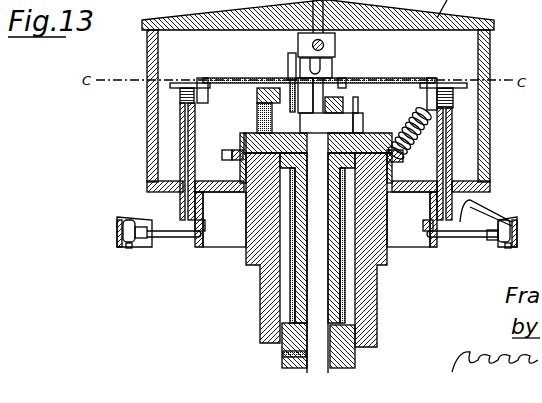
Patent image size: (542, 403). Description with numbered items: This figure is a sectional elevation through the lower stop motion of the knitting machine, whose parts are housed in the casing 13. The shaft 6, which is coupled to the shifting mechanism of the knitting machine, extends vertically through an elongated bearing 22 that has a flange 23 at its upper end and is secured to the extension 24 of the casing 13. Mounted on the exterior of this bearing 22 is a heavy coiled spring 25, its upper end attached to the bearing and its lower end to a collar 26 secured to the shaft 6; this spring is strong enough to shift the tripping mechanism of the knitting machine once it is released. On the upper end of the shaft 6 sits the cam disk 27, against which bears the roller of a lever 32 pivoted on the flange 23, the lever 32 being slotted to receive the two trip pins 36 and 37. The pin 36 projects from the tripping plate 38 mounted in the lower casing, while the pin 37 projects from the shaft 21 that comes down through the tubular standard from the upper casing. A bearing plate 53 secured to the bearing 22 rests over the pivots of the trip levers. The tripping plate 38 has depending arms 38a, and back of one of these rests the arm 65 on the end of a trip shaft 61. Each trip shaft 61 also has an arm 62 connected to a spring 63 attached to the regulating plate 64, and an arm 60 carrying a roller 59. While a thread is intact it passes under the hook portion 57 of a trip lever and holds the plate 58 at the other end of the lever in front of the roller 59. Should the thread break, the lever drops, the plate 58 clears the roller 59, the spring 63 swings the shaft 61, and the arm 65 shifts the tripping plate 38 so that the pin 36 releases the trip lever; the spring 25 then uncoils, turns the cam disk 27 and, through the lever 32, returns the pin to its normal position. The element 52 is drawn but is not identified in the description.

The casing of the lower stop motion 13 is at (147, 115).
The shaft 21 is at (299, 36).
The trip pin 37 is at (288, 65).
The trip pin 36 is at (296, 113).
The tripping plate 38 is at (377, 78).
The depending arms 38a is at (208, 91).
The arm 65 is at (199, 83).
The arm 62 is at (198, 103).
The trip shaft 61 is at (185, 147).
The bearing plate 53 is at (257, 97).
The threaded stud 52 is at (257, 120).
The cam disk 27 is at (330, 105).
The lever 32 is at (357, 108).
The spring 63 is at (407, 115).
The flange 23 is at (242, 138).
The regulating plate 64 is at (230, 160).
The extension of the casing 24 is at (250, 255).
The elongated bearing 22 is at (300, 272).
The coiled spring 25 is at (347, 292).
The shaft 6 is at (317, 263).
The collar 26 is at (355, 356).
The arm 60 is at (172, 238).
The plate 58 is at (117, 235).
The roller 59 is at (129, 248).
The hook portion 57 is at (478, 204).